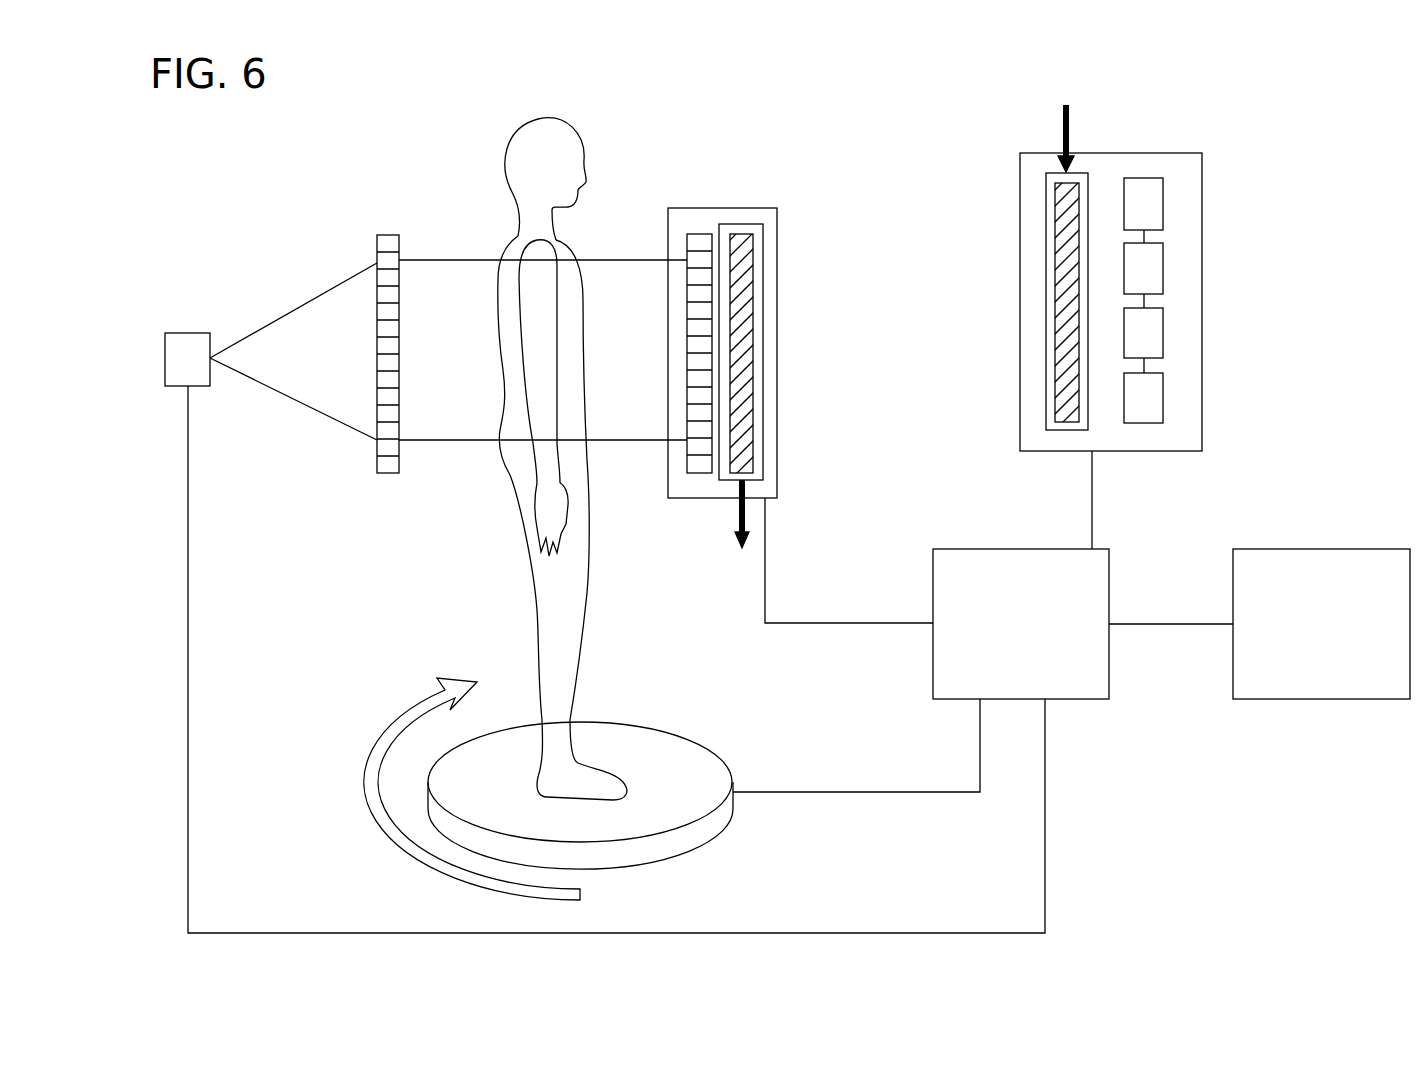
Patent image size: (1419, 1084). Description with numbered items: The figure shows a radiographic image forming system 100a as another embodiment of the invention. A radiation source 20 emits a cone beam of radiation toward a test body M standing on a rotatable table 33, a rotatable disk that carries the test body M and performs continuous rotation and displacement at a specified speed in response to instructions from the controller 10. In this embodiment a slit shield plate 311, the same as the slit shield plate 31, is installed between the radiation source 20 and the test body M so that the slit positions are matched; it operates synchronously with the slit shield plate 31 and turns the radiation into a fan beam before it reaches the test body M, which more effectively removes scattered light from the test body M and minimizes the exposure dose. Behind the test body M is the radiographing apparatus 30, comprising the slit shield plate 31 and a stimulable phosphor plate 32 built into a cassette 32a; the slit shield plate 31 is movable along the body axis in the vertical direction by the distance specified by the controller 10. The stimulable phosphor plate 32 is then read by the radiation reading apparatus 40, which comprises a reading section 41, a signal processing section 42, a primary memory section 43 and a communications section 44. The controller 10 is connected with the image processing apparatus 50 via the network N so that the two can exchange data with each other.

The radiographic image forming system 100a is at (280, 237).
The radiation source 20 is at (187, 333).
The slit shield plate 311 is at (388, 475).
The test body M is at (503, 146).
The radiographing apparatus 30 is at (689, 500).
The slit shield plate 31 is at (698, 234).
The stimulable phosphor plate 32 is at (740, 234).
The cassette 32a is at (1090, 188).
The rotatable table 33 is at (696, 740).
The radiation reading apparatus 40 is at (1020, 210).
The reading section 41 is at (1165, 207).
The signal processing section 42 is at (1165, 268).
The primary memory section 43 is at (1165, 333).
The communications section 44 is at (1165, 398).
The controller 10 is at (1058, 548).
The image processing apparatus 50 is at (1322, 548).
The network N is at (1170, 627).